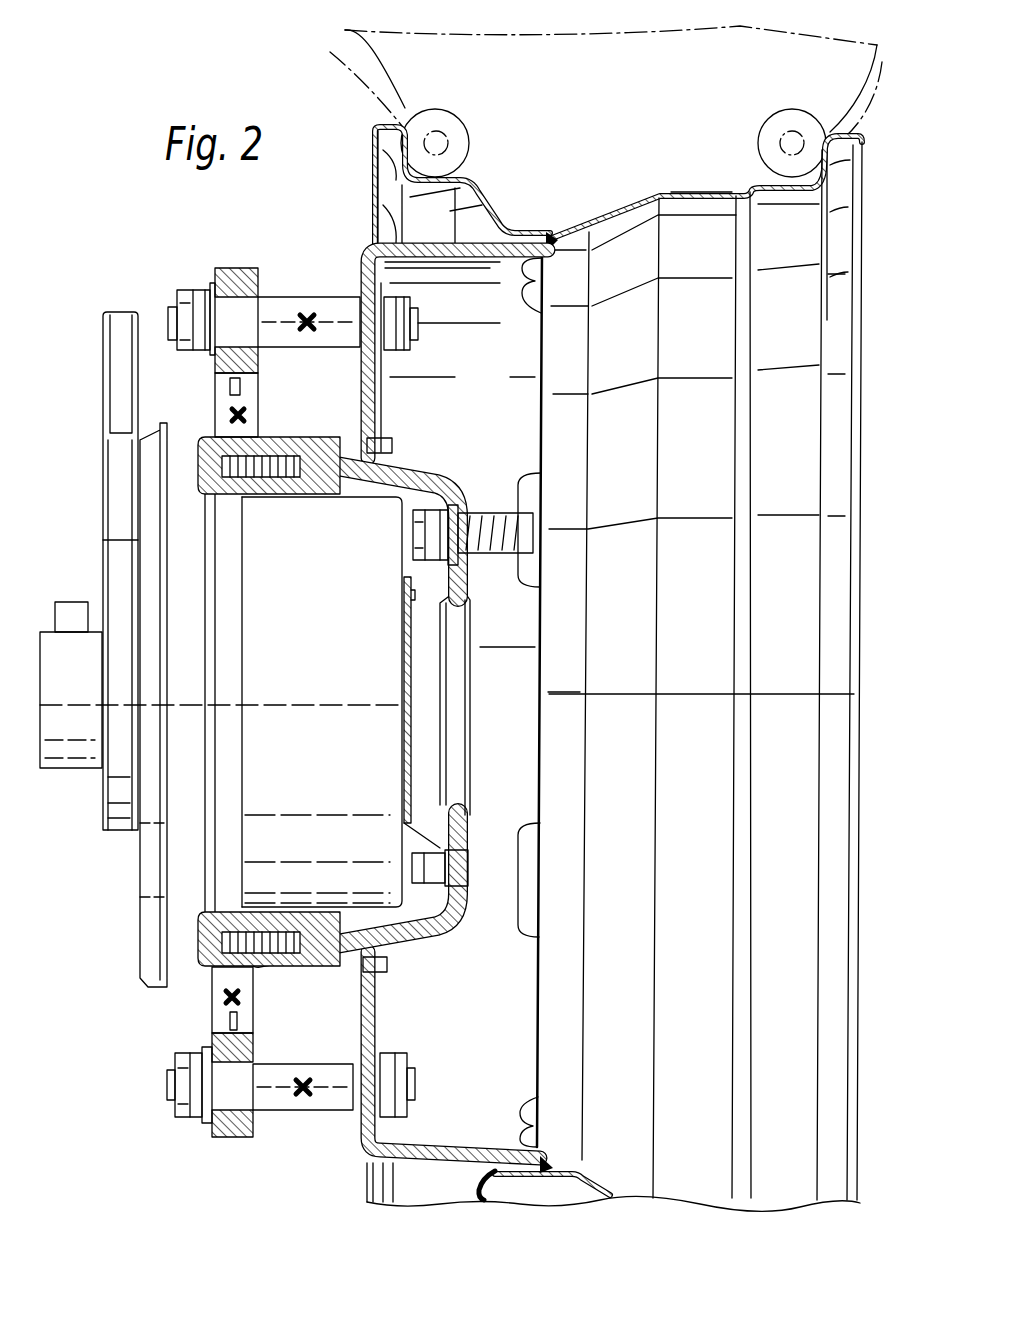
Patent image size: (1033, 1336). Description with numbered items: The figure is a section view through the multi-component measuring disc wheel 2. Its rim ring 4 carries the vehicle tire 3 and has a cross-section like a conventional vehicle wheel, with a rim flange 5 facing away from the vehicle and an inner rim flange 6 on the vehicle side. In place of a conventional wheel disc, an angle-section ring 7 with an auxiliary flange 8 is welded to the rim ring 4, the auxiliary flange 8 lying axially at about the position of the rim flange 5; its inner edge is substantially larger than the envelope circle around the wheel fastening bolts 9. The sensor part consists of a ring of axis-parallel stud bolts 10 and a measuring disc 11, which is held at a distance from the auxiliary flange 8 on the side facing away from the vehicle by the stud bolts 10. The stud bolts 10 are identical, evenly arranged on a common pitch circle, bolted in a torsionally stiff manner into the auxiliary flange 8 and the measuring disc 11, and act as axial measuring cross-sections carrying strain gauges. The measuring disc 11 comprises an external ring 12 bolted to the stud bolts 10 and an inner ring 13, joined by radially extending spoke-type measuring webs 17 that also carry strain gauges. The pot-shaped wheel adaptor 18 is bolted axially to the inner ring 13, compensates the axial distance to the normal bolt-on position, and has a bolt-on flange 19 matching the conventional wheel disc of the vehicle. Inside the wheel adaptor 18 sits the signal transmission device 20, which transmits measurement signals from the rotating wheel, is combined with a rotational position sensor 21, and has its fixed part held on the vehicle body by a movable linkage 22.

The multi-component measuring disc wheel 2 is at (366, 189).
The vehicle tire 3 is at (355, 70).
The rim ring 4 is at (498, 212).
The rim flange 5 is at (423, 111).
The inner rim flange 6 is at (816, 128).
The angle-section ring 7 is at (452, 258).
The auxiliary flange 8 is at (376, 373).
The wheel fastening bolts 9 is at (497, 513).
The stud bolts 10 is at (288, 296).
The measuring disc 11 is at (233, 262).
The external ring 12 is at (227, 367).
The inner ring 13 is at (232, 490).
The measuring webs 17 is at (248, 413).
The wheel adaptor 18 is at (424, 453).
The bolt-on flange 19 is at (470, 598).
The signal transmission device 20 is at (292, 763).
The rotational position sensor 21 is at (82, 750).
The linkage 22 is at (117, 475).